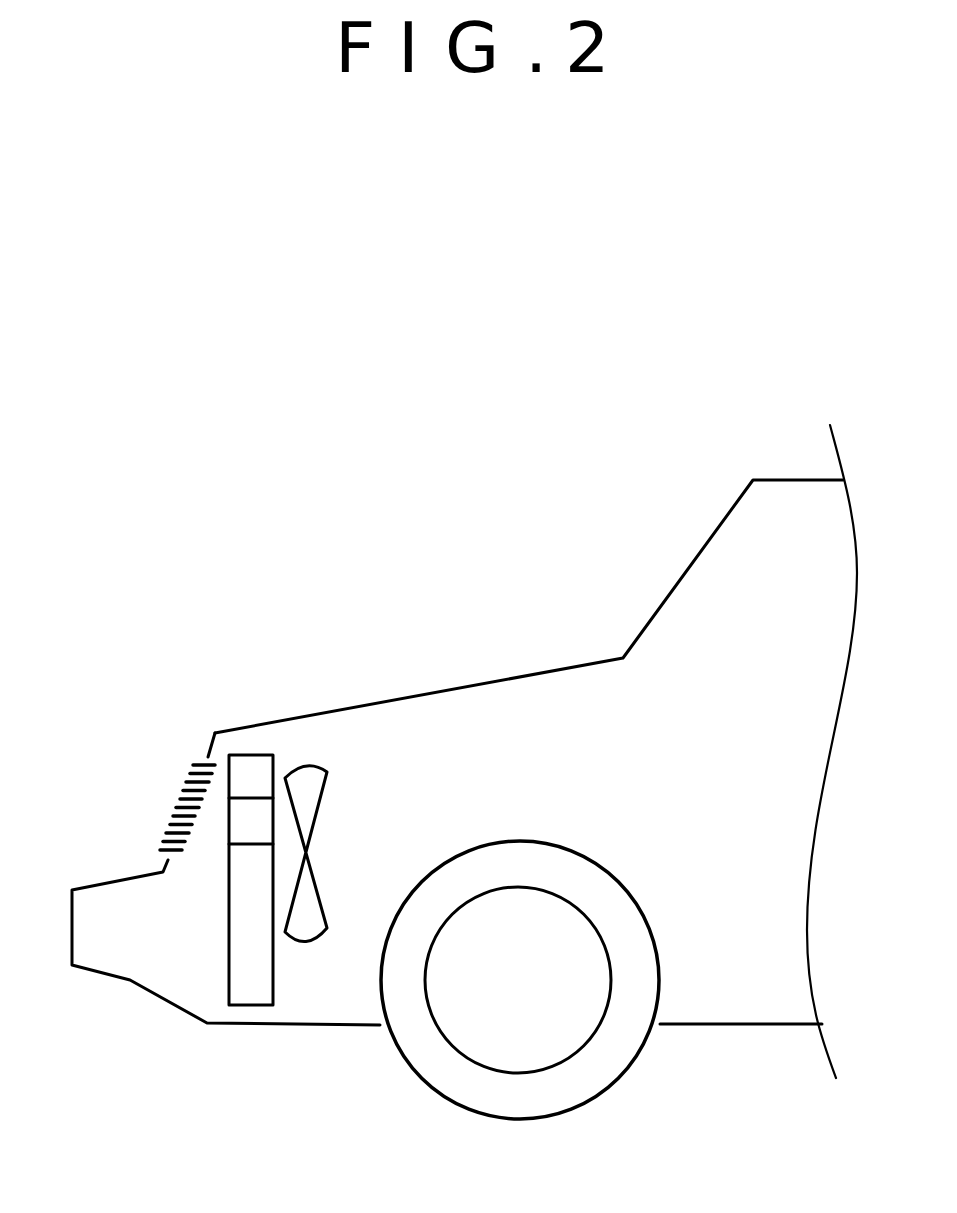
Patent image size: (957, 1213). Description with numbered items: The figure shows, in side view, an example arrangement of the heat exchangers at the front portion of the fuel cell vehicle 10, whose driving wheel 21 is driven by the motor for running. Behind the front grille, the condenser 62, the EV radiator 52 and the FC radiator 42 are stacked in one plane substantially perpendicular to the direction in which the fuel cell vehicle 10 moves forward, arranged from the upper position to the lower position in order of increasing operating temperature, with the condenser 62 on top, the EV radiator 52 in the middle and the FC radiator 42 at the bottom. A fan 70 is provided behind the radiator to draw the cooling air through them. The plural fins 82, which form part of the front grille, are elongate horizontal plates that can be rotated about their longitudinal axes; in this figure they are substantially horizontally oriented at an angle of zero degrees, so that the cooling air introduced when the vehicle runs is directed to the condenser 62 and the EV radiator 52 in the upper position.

The fuel cell vehicle 10 is at (507, 678).
The driving wheel 21 is at (563, 848).
The FC radiator 42 is at (273, 973).
The EV radiator 52 is at (228, 817).
The condenser 62 is at (250, 754).
The fan 70 is at (323, 803).
The fins 82 is at (198, 767).